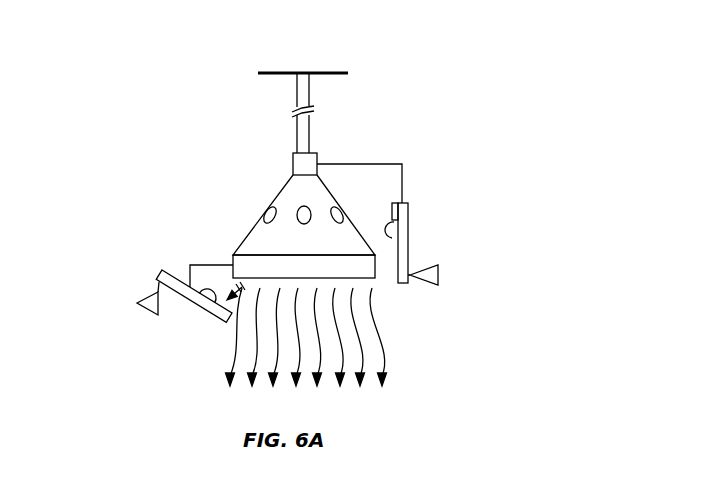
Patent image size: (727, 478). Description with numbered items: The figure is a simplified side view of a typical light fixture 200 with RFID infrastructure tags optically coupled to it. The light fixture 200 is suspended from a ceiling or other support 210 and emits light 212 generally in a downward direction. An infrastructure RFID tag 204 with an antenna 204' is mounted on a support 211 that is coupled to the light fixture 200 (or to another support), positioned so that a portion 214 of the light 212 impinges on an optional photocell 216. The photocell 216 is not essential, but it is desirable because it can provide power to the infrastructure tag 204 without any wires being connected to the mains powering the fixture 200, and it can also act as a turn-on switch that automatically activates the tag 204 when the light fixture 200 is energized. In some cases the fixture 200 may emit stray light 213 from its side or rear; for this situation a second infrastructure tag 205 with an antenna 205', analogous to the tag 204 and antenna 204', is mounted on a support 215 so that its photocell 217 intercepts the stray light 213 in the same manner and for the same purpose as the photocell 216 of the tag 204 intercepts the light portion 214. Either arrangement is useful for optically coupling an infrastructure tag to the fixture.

The light fixture 200 is at (450, 56).
The infrastructure RFID tag 204 is at (159, 275).
The antenna 204' is at (111, 310).
The infrastructure tag 205 is at (442, 262).
The antenna 205' is at (467, 269).
The ceiling or other support 210 is at (331, 75).
The support 211 is at (207, 264).
The light 212 is at (404, 365).
The stray light 213 is at (381, 215).
The portion of light 214 is at (242, 290).
The support 215 is at (392, 164).
The photocell 216 is at (203, 292).
The photocell 217 is at (392, 238).